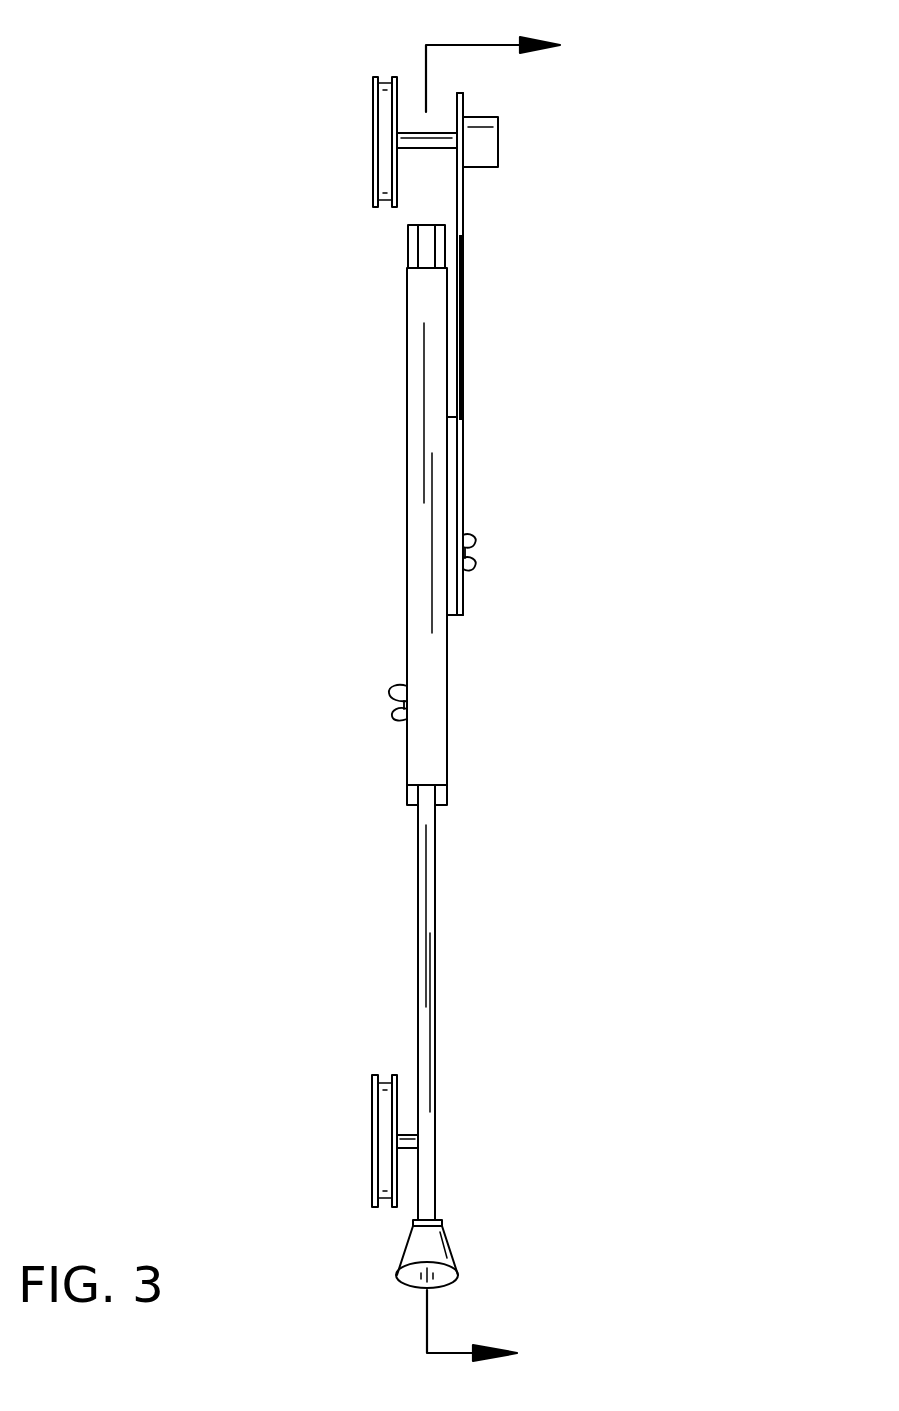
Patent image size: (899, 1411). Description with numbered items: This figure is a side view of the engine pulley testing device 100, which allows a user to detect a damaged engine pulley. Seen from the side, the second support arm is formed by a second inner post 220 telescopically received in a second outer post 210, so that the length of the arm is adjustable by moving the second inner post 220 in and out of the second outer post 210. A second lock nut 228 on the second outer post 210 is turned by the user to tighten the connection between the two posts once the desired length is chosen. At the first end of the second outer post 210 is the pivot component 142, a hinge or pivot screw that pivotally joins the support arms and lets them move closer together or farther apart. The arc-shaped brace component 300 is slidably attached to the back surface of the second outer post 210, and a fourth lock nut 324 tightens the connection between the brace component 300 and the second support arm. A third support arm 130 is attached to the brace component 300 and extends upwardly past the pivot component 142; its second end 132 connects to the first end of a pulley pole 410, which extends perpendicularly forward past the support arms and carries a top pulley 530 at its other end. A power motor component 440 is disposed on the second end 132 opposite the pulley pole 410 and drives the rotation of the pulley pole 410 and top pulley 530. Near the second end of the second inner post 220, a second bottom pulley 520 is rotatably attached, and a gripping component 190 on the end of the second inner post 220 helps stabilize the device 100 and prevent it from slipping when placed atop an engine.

The engine pulley testing device 100 is at (728, 282).
The third support arm 130 is at (465, 298).
The second end of the third support arm 132 is at (470, 93).
The pivot component 142 is at (412, 262).
The gripping component 190 is at (445, 1250).
The second outer post 210 is at (447, 700).
The second inner post 220 is at (437, 946).
The second lock nut 228 is at (397, 716).
The brace component 300 is at (459, 615).
The fourth lock nut 324 is at (473, 540).
The pulley pole 410 is at (413, 149).
The power motor component 440 is at (498, 145).
The second bottom pulley 520 is at (372, 1150).
The top pulley 530 is at (373, 93).